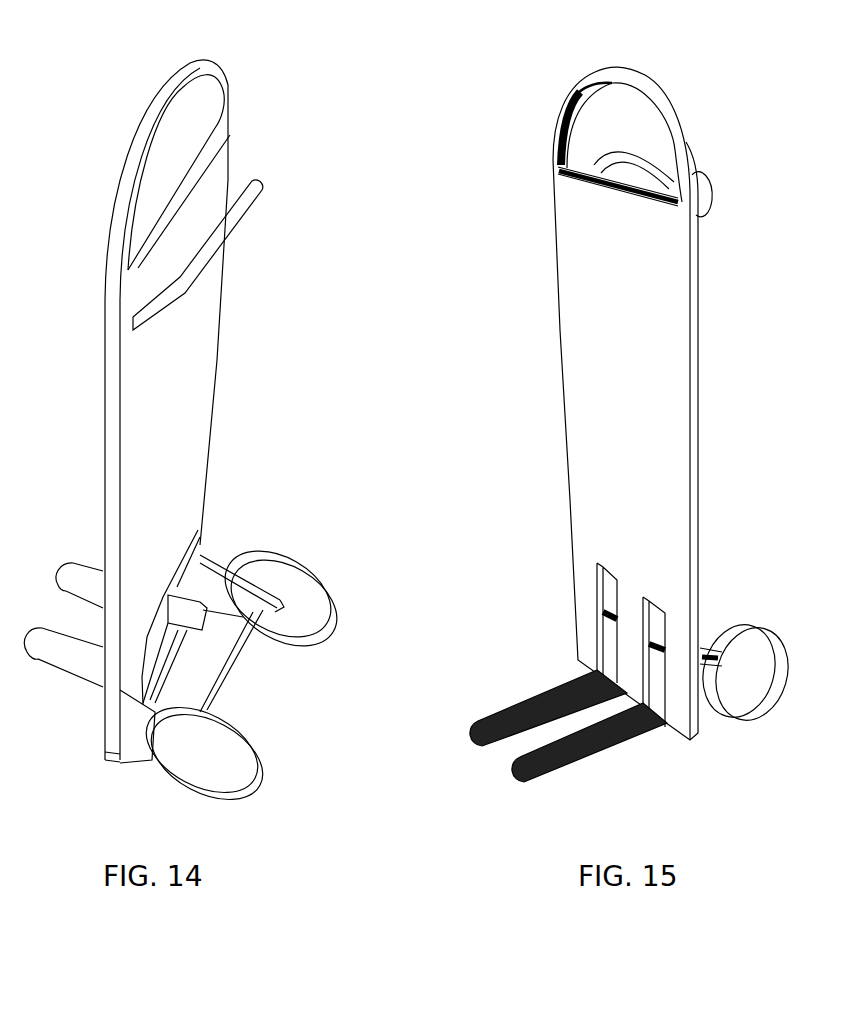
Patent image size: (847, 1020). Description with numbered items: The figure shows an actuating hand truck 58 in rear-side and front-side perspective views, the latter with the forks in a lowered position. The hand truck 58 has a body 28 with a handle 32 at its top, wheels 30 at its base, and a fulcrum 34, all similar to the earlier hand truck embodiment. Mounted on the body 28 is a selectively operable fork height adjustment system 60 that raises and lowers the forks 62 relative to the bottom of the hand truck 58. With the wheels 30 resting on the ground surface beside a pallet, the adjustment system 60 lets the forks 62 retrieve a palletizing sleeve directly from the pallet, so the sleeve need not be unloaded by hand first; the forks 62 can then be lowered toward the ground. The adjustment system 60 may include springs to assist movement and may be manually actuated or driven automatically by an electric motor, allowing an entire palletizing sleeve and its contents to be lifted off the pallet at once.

In FIG. 14, the actuating hand truck 58 is at (300, 105).
In FIG. 15, the actuating hand truck 58 is at (735, 103).
In FIG. 14, the body 28 is at (185, 406).
In FIG. 15, the body 28 is at (635, 334).
In FIG. 14, the handle 32 is at (223, 118).
In FIG. 15, the handle 32 is at (677, 138).
In FIG. 14, the fork height adjustment system 60 is at (173, 594).
In FIG. 15, the fork height adjustment system 60 is at (590, 617).
In FIG. 14, the fulcrum 34 is at (253, 637).
In FIG. 15, the fulcrum 34 is at (707, 640).
In FIG. 14, the wheels 30 is at (322, 623).
In FIG. 15, the wheels 30 is at (777, 650).
In FIG. 14, the forks 62 is at (83, 583).
In FIG. 15, the forks 62 is at (490, 722).